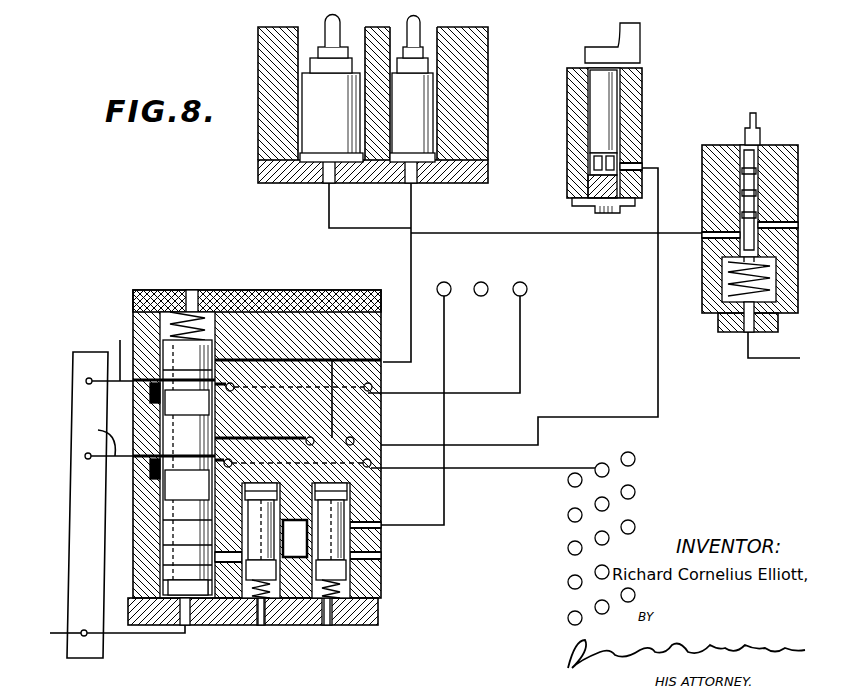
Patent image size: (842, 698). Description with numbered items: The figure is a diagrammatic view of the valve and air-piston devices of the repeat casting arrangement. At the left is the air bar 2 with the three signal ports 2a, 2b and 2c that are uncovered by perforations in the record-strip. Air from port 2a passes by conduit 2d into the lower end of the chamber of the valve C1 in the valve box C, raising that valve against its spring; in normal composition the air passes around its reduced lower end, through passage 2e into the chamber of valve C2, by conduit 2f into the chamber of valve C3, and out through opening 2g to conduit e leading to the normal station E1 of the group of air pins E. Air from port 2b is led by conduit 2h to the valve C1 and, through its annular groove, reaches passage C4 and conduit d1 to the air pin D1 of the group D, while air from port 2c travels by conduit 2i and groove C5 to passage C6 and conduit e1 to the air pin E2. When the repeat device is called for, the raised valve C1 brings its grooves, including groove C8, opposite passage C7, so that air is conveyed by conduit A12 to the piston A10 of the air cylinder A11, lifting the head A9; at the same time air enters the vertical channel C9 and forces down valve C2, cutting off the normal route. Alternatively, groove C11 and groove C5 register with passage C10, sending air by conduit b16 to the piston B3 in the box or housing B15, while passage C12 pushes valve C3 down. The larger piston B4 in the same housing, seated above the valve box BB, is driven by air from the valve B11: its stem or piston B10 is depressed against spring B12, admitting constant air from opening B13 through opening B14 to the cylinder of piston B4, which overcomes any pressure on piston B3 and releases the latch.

The box or housing B15 is at (268, 46).
The valve box BB is at (260, 175).
The piston B4 is at (331, 89).
The piston B3 is at (412, 89).
The conduit b16 is at (412, 212).
The opening B14 is at (506, 233).
The head A9 is at (633, 48).
The piston A10 is at (607, 106).
The air cylinder A11 is at (630, 131).
The conduit A12 is at (660, 172).
The piston or valve stem B10 is at (757, 119).
The valve B11 is at (748, 188).
The spring B12 is at (733, 279).
The opening B13 is at (746, 348).
The normal station E1 is at (444, 282).
The group of air pins E is at (481, 282).
The air pin E2 is at (520, 282).
The conduit e is at (445, 344).
The conduit e1 is at (522, 344).
The valve box C is at (268, 318).
The valve C1 is at (168, 522).
The annular groove C5 is at (187, 403).
The vertical channel C9 is at (187, 485).
The passage C10 is at (385, 366).
The vertical groove C11 is at (168, 397).
The groove C8 is at (167, 478).
The passage C12 is at (383, 411).
The passage C6 is at (425, 391).
The passage C7 is at (376, 441).
The passage C4 is at (376, 470).
The opening 2g is at (372, 523).
The valve C3 is at (378, 549).
The valve C2 is at (378, 566).
The passage 2e is at (233, 625).
The conduit 2f is at (327, 625).
The air bar 2 is at (75, 580).
The port 2c is at (89, 377).
The conduit 2i is at (115, 351).
The port 2b is at (87, 460).
The conduit 2h is at (95, 436).
The port 2a is at (62, 633).
The conduit 2d is at (137, 636).
The conduit d1 is at (503, 470).
The air pin D1 is at (602, 462).
The group of air pins D is at (585, 557).